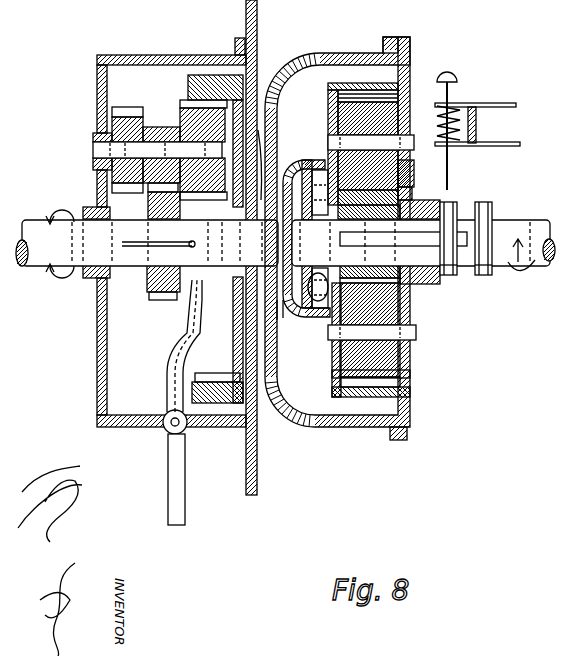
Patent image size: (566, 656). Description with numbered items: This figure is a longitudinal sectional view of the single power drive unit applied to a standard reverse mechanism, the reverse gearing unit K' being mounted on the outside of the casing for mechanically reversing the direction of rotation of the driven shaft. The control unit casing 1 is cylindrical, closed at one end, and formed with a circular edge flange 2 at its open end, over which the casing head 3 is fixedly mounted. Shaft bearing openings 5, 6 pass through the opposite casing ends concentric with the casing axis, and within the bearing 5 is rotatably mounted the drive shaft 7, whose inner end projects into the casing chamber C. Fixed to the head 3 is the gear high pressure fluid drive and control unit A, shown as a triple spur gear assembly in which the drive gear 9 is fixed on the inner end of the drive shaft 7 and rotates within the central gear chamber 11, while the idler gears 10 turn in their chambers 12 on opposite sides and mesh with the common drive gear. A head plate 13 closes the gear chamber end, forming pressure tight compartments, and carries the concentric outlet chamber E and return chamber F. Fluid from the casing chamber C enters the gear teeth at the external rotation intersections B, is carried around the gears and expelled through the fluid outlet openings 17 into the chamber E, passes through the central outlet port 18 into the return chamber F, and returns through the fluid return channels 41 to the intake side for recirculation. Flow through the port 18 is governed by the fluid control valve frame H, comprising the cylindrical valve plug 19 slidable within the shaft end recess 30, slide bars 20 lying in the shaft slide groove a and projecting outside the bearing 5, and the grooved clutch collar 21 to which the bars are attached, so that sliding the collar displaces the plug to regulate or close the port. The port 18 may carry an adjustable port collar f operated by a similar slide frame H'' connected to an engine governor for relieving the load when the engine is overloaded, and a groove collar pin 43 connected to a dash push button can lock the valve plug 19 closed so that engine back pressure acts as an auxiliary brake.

The reverse gearing unit K' is at (164, 271).
The external gear tooth rotation intersections B is at (41, 223).
The circular edge flange 2 is at (389, 44).
The casing head 3 is at (402, 40).
The gear high pressure fluid drive and control unit A is at (345, 92).
The fluid outlet openings 17 is at (326, 150).
The fluid return channels 41 is at (310, 160).
The fluid return chamber F is at (297, 167).
The fluid outlet discharge chamber E is at (322, 170).
The adjustable port collar f is at (269, 165).
The idler gears 10 is at (402, 110).
The idler gear chambers 12 is at (398, 114).
The groove collar pin 43 is at (452, 97).
The shaft end cylindrical recess 30 is at (412, 187).
The shaft bearing opening 5 is at (412, 207).
The shaft slide groove a is at (420, 219).
The slide bars 20 is at (448, 206).
The grooved circular clutch collar 21 is at (478, 201).
The drive shaft 7 is at (522, 198).
The valve plug 19 is at (325, 272).
The central outlet port 18 is at (300, 312).
The shaft bearing opening 6 is at (279, 320).
The head plate 13 is at (337, 361).
The casing chamber C is at (337, 232).
The control unit casing 1 is at (305, 425).
The central gear chamber 11 is at (411, 276).
The drive gear 9 is at (414, 289).
The fluid control valve frame H is at (452, 282).
The slide operating frame H'' is at (499, 284).